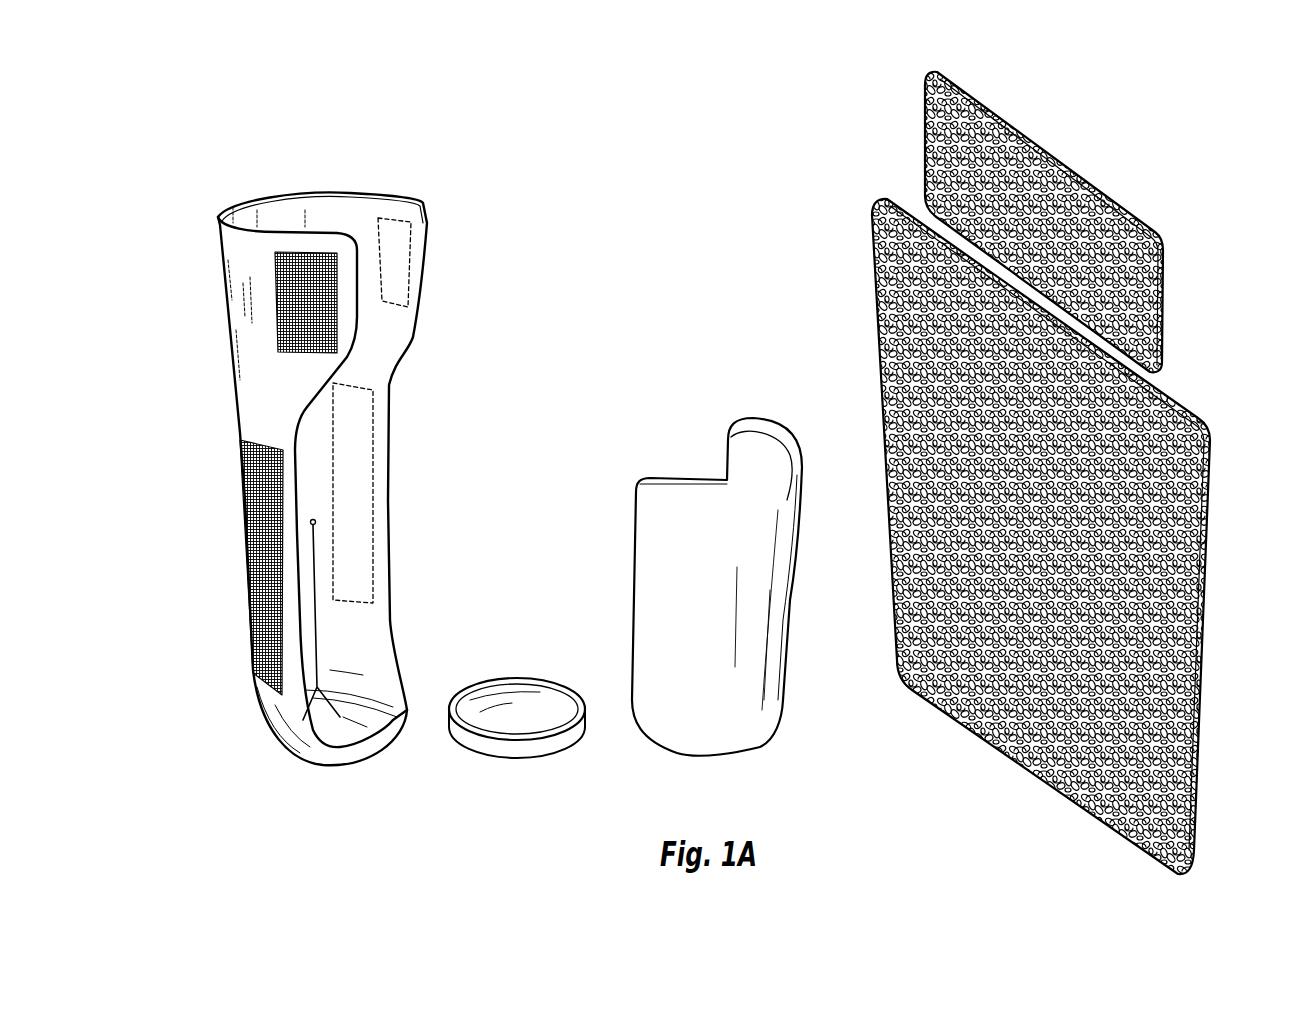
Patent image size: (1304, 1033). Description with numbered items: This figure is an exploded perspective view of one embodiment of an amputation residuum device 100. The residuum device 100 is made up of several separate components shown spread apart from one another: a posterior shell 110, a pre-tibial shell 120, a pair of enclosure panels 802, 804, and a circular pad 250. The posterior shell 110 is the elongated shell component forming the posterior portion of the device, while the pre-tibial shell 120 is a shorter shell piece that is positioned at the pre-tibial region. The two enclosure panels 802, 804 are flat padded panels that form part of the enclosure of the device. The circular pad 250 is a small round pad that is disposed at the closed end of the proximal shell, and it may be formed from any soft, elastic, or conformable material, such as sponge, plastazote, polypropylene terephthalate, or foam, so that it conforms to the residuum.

The amputation residuum device 100 is at (291, 93).
The posterior shell 110 is at (368, 206).
The pre-tibial shell 120 is at (742, 440).
The circular pad 250 is at (520, 690).
The enclosure panel 802 is at (1035, 157).
The enclosure panel 804 is at (870, 220).